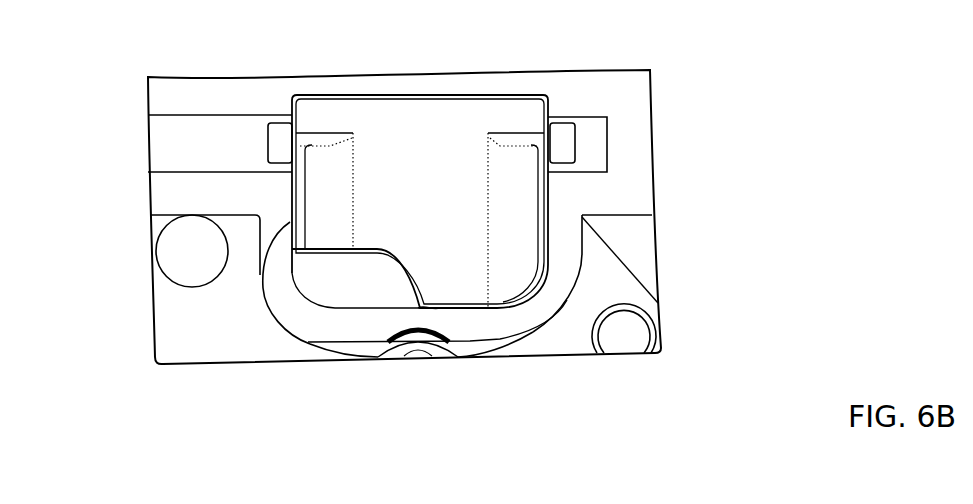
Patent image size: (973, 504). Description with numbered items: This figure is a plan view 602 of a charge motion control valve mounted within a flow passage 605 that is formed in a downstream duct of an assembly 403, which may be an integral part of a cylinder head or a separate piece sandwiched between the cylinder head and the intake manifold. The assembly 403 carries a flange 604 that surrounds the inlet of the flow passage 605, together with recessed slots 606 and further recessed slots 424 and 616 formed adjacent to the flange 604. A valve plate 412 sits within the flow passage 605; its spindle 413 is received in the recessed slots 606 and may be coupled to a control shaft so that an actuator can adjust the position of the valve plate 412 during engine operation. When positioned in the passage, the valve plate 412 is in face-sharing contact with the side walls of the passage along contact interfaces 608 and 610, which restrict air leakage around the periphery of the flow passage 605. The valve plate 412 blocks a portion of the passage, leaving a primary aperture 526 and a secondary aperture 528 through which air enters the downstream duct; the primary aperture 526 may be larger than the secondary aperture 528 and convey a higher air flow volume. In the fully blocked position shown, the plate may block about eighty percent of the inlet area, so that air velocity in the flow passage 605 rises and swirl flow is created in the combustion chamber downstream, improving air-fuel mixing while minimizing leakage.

The plan view 602 is at (106, 77).
The flange 604 is at (272, 96).
The recessed slots 606 is at (183, 130).
The assembly 403 is at (632, 155).
The contact interface 610 is at (460, 93).
The spindle 413 is at (560, 130).
The valve plate 412 is at (384, 108).
The recessed slots 616 is at (172, 258).
The contact interface 608 is at (258, 285).
The primary aperture 526 is at (317, 290).
The secondary aperture 528 is at (557, 313).
The recessed slots 424 is at (412, 342).
The flow passage 605 is at (360, 300).